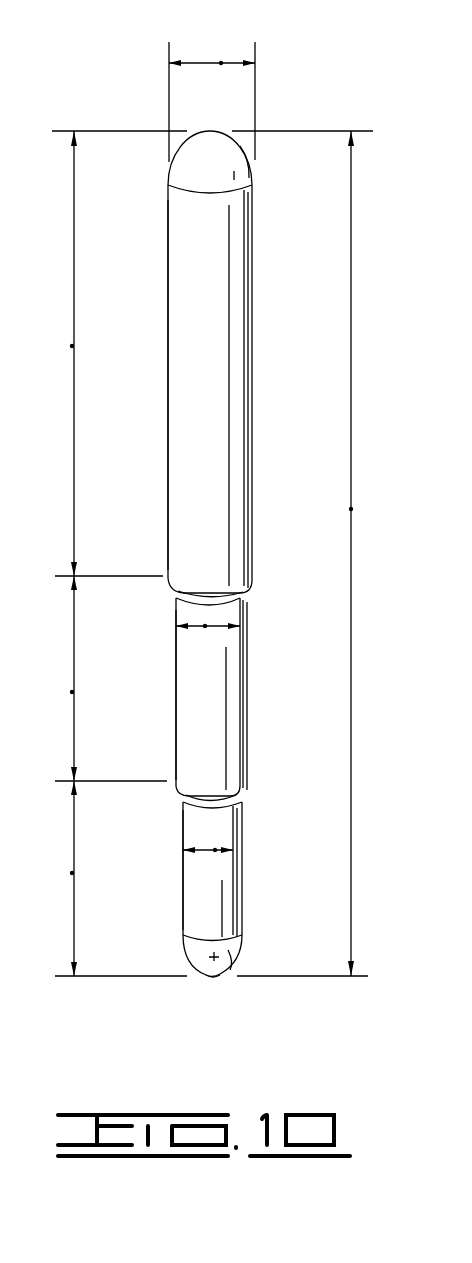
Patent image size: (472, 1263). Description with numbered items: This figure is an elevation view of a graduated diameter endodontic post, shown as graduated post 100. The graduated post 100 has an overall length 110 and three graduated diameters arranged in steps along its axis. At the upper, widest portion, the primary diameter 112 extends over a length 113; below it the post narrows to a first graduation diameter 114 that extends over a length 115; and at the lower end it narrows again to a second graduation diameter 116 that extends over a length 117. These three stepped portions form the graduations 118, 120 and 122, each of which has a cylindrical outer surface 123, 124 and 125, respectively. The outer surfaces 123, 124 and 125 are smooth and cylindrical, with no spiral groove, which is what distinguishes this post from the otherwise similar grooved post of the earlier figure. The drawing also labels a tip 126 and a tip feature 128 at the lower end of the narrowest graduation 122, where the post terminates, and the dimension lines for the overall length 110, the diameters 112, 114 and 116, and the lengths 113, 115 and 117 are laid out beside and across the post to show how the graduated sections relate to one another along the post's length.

The graduated post 100 is at (155, 266).
The overall length 110 is at (351, 509).
The primary diameter 112 is at (221, 63).
The length 113 is at (72, 346).
The first graduation diameter 114 is at (205, 626).
The length 115 is at (72, 692).
The second graduation diameter 116 is at (215, 850).
The length 117 is at (72, 873).
The graduation 118 is at (222, 355).
The graduation 120 is at (218, 700).
The graduation 122 is at (218, 890).
The cylindrical outer surface 123 is at (168, 463).
The cylindrical outer surface 124 is at (175, 722).
The cylindrical outer surface 125 is at (182, 887).
The tip end 126 is at (213, 978).
The rounded tip 128 is at (218, 957).